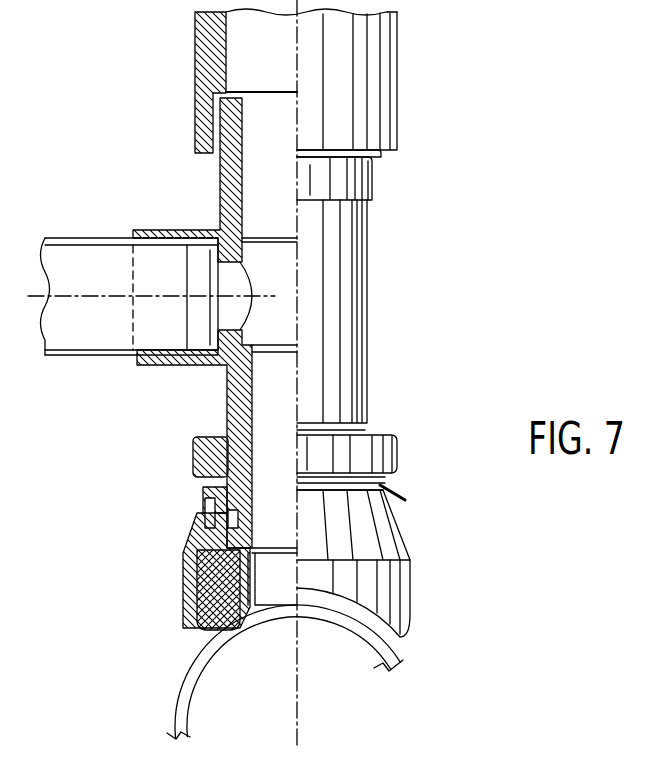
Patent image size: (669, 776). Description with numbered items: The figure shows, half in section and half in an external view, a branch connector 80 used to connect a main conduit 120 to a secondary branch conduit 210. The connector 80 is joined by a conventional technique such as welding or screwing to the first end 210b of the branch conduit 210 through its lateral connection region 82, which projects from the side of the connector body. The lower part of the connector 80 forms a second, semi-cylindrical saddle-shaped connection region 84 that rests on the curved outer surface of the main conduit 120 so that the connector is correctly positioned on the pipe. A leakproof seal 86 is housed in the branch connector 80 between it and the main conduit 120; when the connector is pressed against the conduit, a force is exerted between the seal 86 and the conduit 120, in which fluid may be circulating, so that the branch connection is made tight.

The branch connector 80 is at (369, 255).
The lateral connection region 82 is at (202, 255).
The second semi-cylindrical (saddle-shaped) connection region 84 is at (385, 593).
The leakproof seal 86 is at (197, 635).
The main conduit 120 is at (197, 675).
The branch conduit 210 is at (76, 233).
The first end of the branch conduit 210b is at (115, 337).